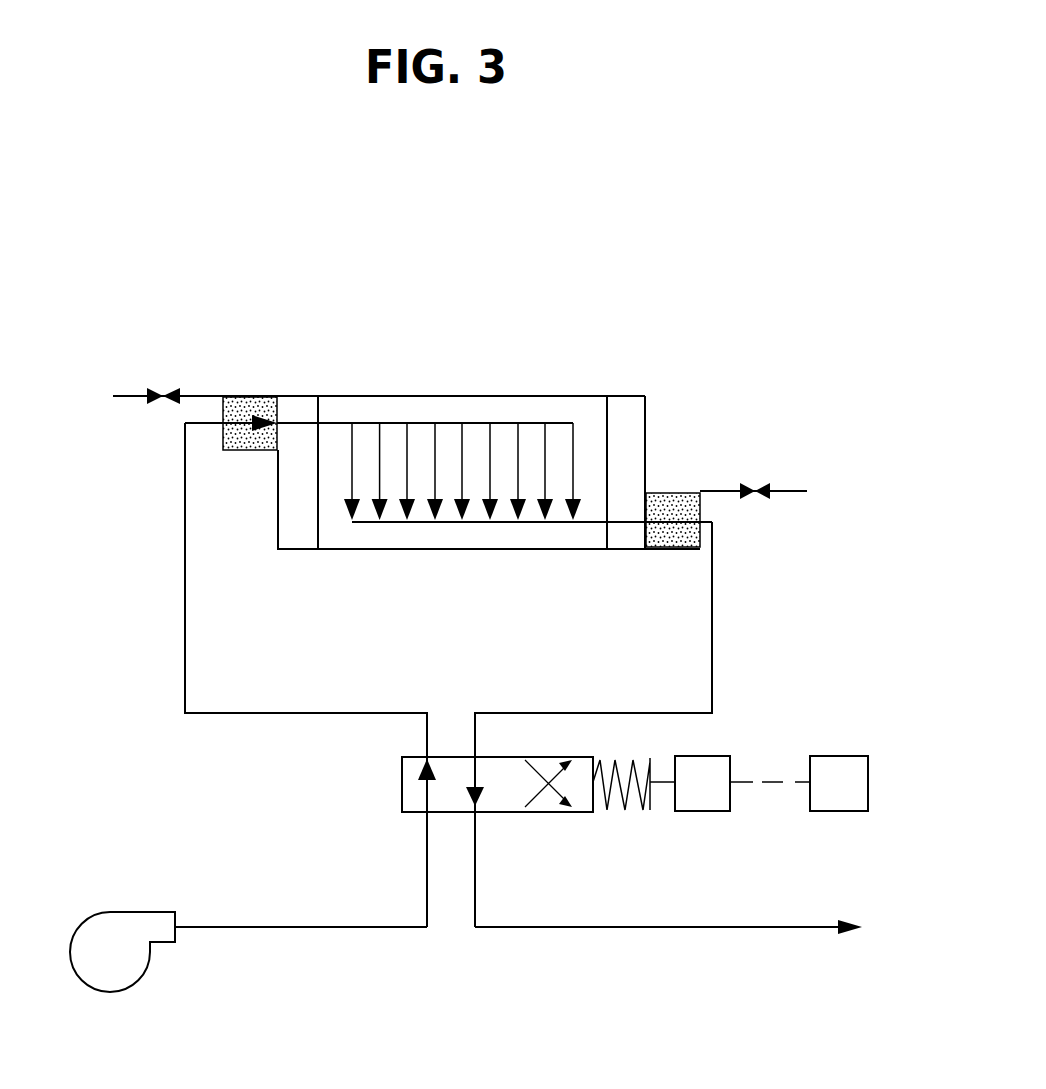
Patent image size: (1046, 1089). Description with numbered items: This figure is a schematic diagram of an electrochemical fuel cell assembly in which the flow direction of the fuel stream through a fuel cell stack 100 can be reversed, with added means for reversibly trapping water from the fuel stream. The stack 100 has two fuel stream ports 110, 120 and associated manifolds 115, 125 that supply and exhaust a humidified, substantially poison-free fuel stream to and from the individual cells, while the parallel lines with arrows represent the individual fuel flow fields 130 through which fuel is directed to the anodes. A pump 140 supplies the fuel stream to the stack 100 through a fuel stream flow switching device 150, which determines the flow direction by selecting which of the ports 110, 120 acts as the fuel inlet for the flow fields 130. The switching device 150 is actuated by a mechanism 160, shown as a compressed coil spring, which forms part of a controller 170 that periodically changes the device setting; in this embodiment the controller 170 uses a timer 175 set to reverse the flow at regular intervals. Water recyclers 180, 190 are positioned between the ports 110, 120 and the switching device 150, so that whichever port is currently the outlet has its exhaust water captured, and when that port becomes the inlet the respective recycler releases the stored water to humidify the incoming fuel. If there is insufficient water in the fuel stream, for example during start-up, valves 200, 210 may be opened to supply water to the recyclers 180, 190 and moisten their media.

The fuel cell stack 100 is at (378, 264).
The fuel stream port 110 is at (298, 412).
The manifold 115 is at (388, 420).
The fuel stream port 120 is at (620, 528).
The manifold 125 is at (470, 527).
The fuel flow fields 130 is at (434, 466).
The pump 140 is at (113, 990).
The fuel stream flow switching device 150 is at (410, 792).
The mechanism 160 is at (623, 805).
The controller 170 is at (718, 765).
The timer 175 is at (853, 762).
The water recycler 180 is at (238, 397).
The water recycler 190 is at (668, 493).
The valve 200 is at (170, 388).
The valve 210 is at (745, 487).